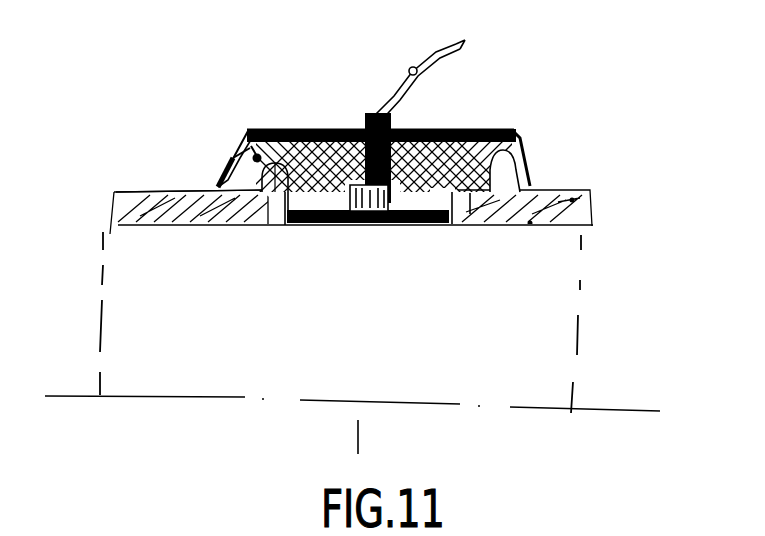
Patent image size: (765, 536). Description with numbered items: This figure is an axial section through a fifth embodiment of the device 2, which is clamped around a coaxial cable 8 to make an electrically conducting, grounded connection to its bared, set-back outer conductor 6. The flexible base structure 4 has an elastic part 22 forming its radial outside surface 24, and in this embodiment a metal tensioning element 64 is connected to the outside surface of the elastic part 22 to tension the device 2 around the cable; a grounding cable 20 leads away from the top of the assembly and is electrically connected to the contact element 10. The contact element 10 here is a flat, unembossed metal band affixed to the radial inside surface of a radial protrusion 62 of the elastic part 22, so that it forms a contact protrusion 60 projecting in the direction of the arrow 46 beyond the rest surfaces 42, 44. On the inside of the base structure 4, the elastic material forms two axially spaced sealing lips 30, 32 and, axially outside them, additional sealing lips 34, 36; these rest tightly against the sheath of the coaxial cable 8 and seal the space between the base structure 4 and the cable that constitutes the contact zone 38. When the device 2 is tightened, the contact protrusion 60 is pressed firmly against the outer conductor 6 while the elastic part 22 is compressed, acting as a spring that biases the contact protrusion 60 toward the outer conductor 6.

The device 2 is at (588, 72).
The base structure 4 is at (212, 152).
The outer conductor 6 is at (270, 210).
The coaxial cable 8 is at (585, 330).
The contact element 10 is at (458, 226).
The grounding cable 20 is at (450, 53).
The elastic part 22 is at (270, 128).
The radial outside surface 24 is at (492, 128).
The sealing lip 30 is at (240, 200).
The sealing lip 32 is at (500, 224).
The additional sealing lip 34 is at (222, 176).
The additional sealing lip 36 is at (525, 178).
The contact zone 38 is at (360, 247).
The rest surface 42 is at (190, 224).
The rest surface 44 is at (520, 160).
The arrow 46 is at (365, 432).
The contact protrusion 60 is at (398, 224).
The radial protrusion 62 is at (283, 200).
The tensioning element 64 is at (344, 128).